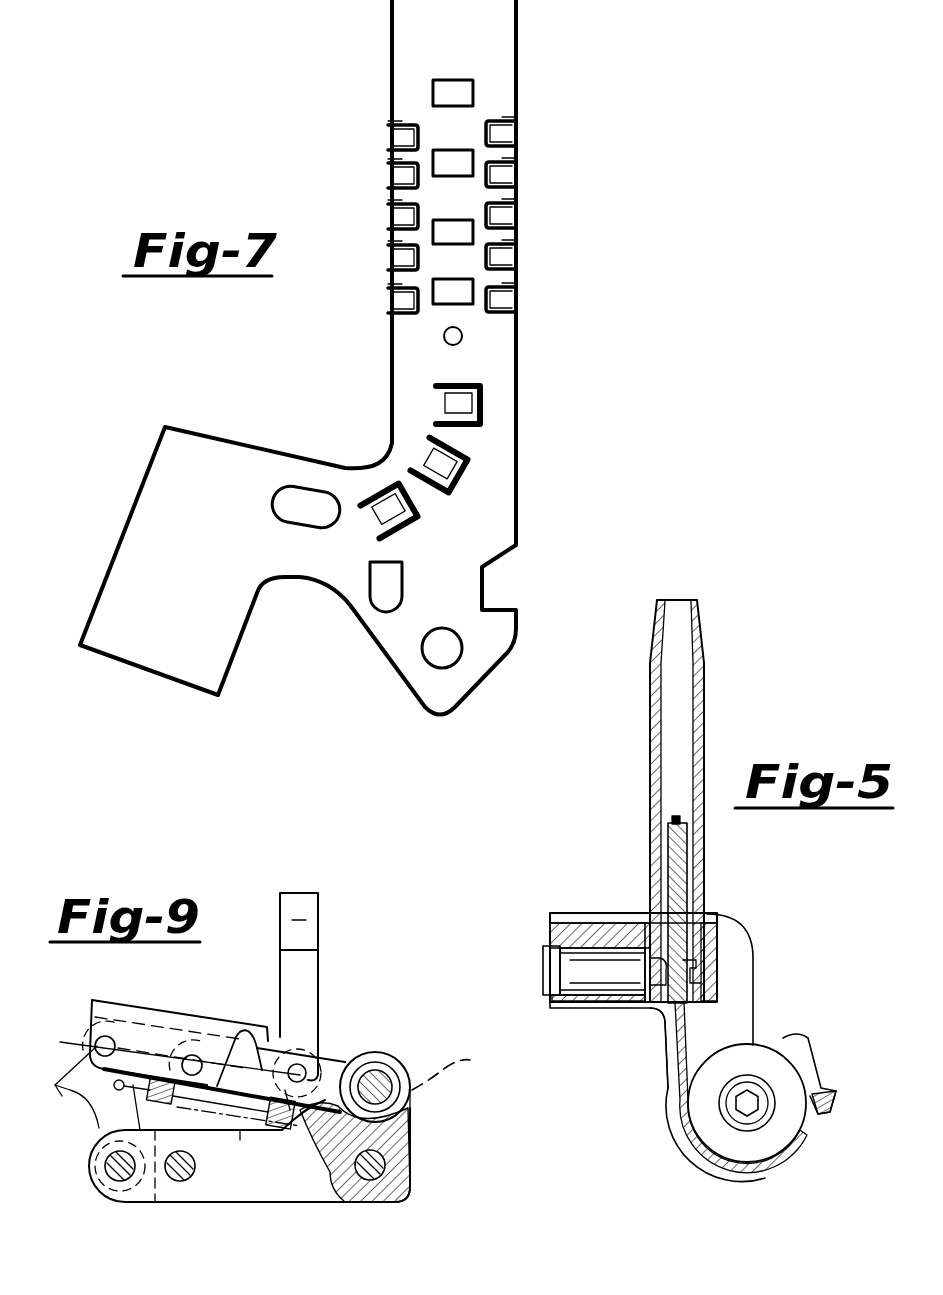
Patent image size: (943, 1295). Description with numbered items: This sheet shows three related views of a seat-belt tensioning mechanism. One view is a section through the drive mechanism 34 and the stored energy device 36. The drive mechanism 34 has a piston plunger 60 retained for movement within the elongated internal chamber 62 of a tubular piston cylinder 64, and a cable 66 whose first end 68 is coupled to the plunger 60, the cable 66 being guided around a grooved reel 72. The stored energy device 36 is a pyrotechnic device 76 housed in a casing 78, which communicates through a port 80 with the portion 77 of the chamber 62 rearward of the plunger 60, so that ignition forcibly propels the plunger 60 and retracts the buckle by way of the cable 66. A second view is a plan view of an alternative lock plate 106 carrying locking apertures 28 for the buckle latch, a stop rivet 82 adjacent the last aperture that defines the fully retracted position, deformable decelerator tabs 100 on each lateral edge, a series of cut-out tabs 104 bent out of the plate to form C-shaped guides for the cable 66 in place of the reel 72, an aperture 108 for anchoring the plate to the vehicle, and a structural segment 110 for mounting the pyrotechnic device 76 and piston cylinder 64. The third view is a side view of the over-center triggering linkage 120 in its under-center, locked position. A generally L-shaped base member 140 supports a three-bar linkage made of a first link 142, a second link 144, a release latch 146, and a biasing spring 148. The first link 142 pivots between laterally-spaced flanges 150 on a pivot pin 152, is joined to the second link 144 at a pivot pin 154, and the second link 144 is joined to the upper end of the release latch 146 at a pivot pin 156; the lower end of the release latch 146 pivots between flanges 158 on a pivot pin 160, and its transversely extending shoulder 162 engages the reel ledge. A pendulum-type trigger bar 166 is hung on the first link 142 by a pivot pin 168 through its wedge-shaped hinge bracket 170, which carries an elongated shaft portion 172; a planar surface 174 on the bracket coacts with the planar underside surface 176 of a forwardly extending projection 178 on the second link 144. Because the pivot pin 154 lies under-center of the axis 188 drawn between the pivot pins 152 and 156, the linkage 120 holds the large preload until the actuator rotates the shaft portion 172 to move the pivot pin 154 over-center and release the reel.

In FIG. 7, the locking apertures 28 is at (458, 178).
In FIG. 7, the stop rivet 82 is at (462, 337).
In FIG. 7, the decelerator tabs 100 is at (503, 172).
In FIG. 7, the cut-out tabs 104 is at (455, 470).
In FIG. 7, the lock plate 106 is at (383, 204).
In FIG. 7, the aperture 108 is at (450, 661).
In FIG. 7, the structural segment 110 is at (205, 455).
In FIG. 5, the drive mechanism 34 is at (645, 1025).
In FIG. 5, the stored energy device 36 is at (618, 911).
In FIG. 5, the piston plunger 60 is at (694, 905).
In FIG. 5, the internal chamber 62 is at (696, 737).
In FIG. 5, the piston cylinder 64 is at (703, 703).
In FIG. 5, the cable 66 is at (688, 1056).
In FIG. 5, the first end 68 is at (684, 831).
In FIG. 5, the grooved reel 72 is at (718, 1128).
In FIG. 5, the pyrotechnic device 76 is at (590, 976).
In FIG. 5, the portion of chamber 77 is at (694, 977).
In FIG. 5, the casing 78 is at (572, 912).
In FIG. 5, the port 80 is at (640, 912).
In FIG. 9, the triggering linkage 120 is at (350, 1035).
In FIG. 9, the base member 140 is at (322, 1182).
In FIG. 9, the first link 142 is at (345, 1056).
In FIG. 9, the second link 144 is at (158, 1015).
In FIG. 9, the release latch 146 is at (115, 1132).
In FIG. 9, the biasing spring 148 is at (240, 1142).
In FIG. 9, the laterally-spaced flanges 150 is at (405, 1121).
In FIG. 9, the pivot pin 152 is at (380, 1088).
In FIG. 9, the pivot pin 154 is at (194, 1058).
In FIG. 9, the pivot pin 156 is at (100, 1040).
In FIG. 9, the laterally-spaced flanges 158 is at (140, 1196).
In FIG. 9, the pivot pin 160 is at (110, 1178).
In FIG. 9, the shoulder 162 is at (65, 1096).
In FIG. 9, the trigger bar 166 is at (290, 920).
In FIG. 9, the pivot pin 168 is at (382, 1142).
In FIG. 9, the hinge bracket 170 is at (247, 1135).
In FIG. 9, the shaft portion 172 is at (308, 975).
In FIG. 9, the planar surface 174 is at (206, 1134).
In FIG. 9, the planar underside surface 176 is at (290, 1033).
In FIG. 9, the forwardly extending projection 178 is at (238, 1032).
In FIG. 9, the axis 188 is at (453, 1062).